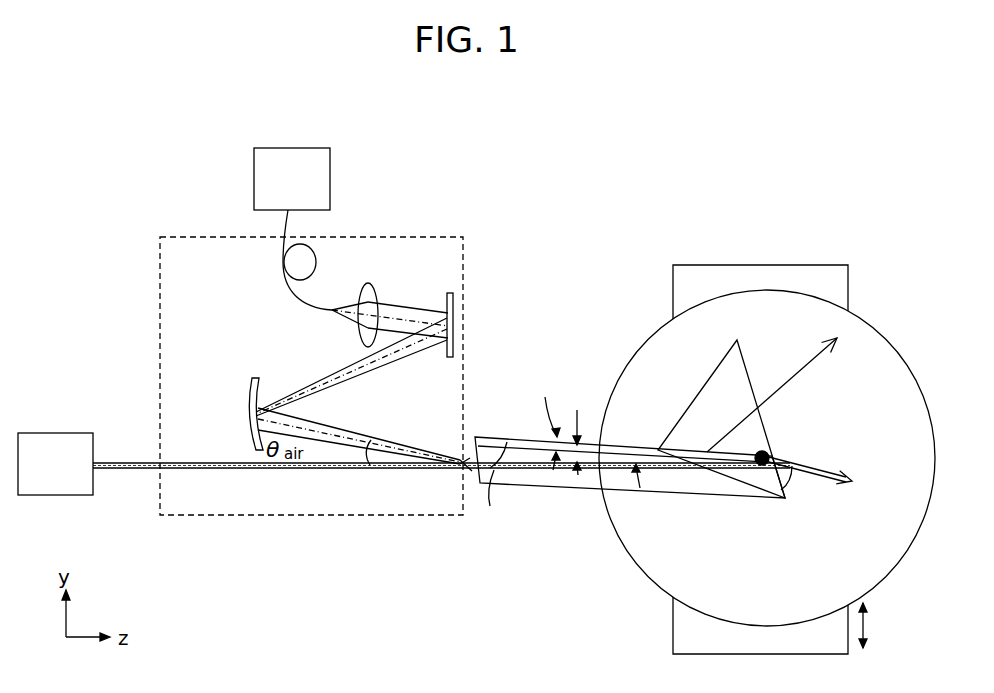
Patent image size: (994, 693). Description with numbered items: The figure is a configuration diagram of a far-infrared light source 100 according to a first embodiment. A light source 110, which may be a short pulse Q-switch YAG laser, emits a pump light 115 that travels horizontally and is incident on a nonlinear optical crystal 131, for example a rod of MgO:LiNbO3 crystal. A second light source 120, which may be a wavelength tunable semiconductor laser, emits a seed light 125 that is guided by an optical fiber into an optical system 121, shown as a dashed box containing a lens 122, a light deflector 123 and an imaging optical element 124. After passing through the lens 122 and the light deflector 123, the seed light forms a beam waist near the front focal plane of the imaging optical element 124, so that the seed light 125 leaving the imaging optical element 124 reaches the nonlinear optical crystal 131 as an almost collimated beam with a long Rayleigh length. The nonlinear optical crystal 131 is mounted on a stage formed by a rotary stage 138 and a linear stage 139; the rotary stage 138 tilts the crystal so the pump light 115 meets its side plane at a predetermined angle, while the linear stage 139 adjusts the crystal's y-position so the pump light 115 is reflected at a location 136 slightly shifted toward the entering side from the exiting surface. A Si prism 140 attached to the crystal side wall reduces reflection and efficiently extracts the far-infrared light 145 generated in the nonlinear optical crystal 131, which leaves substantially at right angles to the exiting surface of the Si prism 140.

The far-infrared light source 100 is at (613, 244).
The light source 110 is at (48, 433).
The pump light 115 is at (122, 470).
The light source 120 is at (330, 184).
The optical system 121 is at (182, 237).
The lens 122 is at (376, 297).
The light deflector 123 is at (453, 313).
The imaging optical element 124 is at (250, 398).
The seed light 125 is at (395, 425).
The nonlinear optical crystal 131 is at (545, 492).
The location 136 is at (770, 456).
The rotary stage 138 is at (632, 562).
The linear stage 139 is at (673, 626).
The Si prism 140 is at (683, 415).
The far-infrared light 145 is at (810, 367).